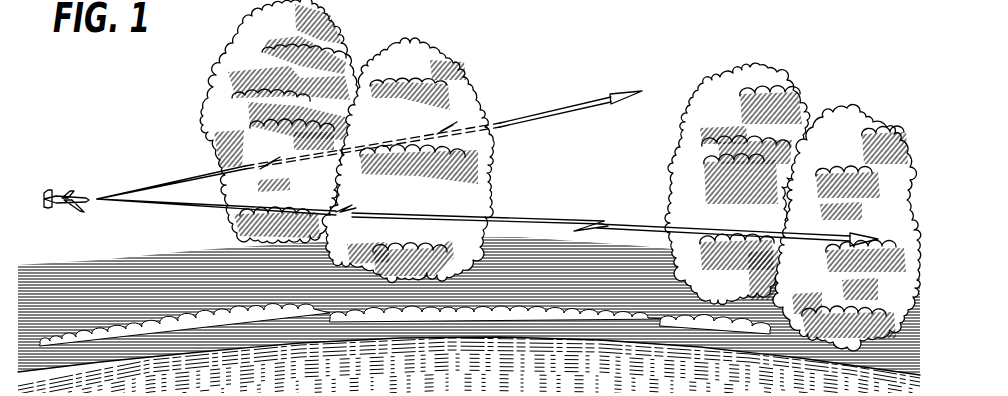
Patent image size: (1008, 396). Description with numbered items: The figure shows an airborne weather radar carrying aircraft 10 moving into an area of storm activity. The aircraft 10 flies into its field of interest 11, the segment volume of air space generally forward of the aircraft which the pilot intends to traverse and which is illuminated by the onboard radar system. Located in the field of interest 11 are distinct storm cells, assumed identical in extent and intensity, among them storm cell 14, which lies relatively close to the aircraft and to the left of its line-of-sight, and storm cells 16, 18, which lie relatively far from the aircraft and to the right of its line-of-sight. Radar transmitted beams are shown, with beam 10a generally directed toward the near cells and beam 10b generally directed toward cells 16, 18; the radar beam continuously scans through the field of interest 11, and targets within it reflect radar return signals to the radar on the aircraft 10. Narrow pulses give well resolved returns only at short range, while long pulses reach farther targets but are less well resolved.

The aircraft 10 is at (62, 186).
The radar transmitted beam 10a is at (198, 175).
The radar transmitted beam 10b is at (190, 206).
The field of interest 11 is at (138, 100).
The storm cell 14 is at (490, 178).
The storm cell 16 is at (732, 72).
The storm cell 18 is at (866, 120).